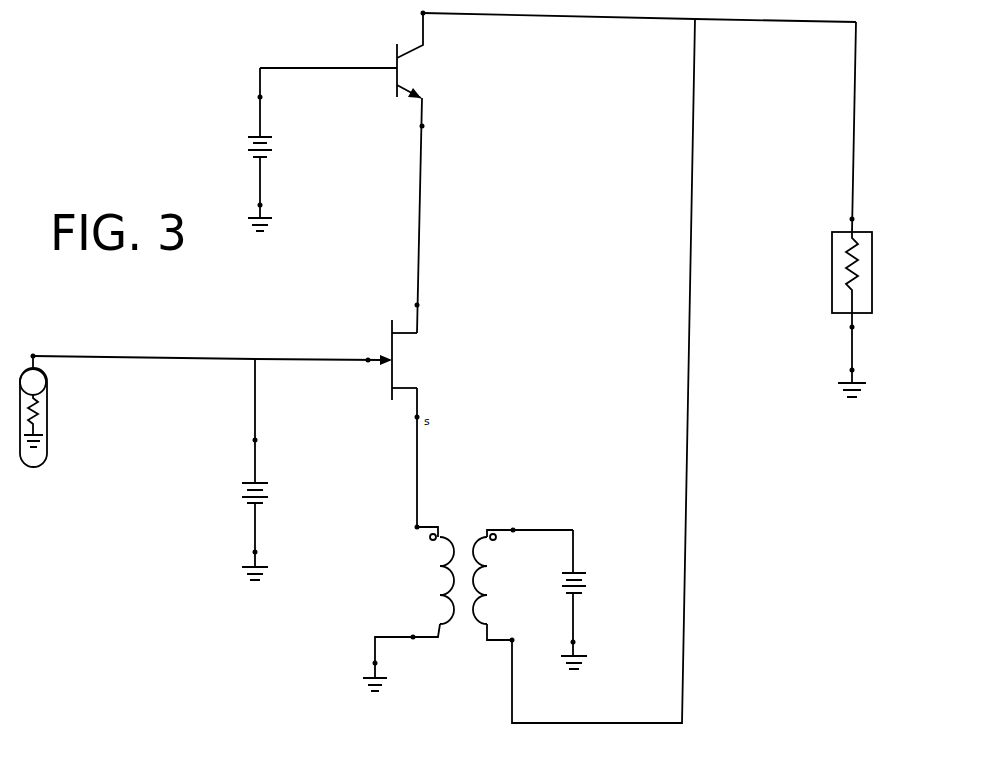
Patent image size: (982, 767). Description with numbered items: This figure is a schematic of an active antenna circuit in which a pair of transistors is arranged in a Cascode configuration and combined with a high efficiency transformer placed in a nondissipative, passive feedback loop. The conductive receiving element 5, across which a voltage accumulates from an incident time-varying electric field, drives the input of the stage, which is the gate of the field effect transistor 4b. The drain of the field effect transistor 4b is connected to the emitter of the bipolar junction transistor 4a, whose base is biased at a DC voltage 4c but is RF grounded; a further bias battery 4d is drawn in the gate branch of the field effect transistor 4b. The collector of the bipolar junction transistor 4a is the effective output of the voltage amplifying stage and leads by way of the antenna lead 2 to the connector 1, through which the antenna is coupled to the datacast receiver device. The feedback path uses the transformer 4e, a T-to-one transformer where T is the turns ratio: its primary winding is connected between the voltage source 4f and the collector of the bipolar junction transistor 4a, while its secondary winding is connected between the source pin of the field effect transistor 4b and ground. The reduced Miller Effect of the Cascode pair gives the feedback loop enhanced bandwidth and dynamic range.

The connector 1 is at (822, 275).
The antenna lead 2 is at (850, 137).
The bipolar junction transistor 4a is at (395, 40).
The field effect transistor 4b is at (385, 323).
The DC bias voltage 4c is at (280, 172).
The battery 4d is at (278, 490).
The T:1 transformer 4e is at (430, 555).
The voltage source 4f is at (596, 579).
The receiving element 5 is at (55, 397).